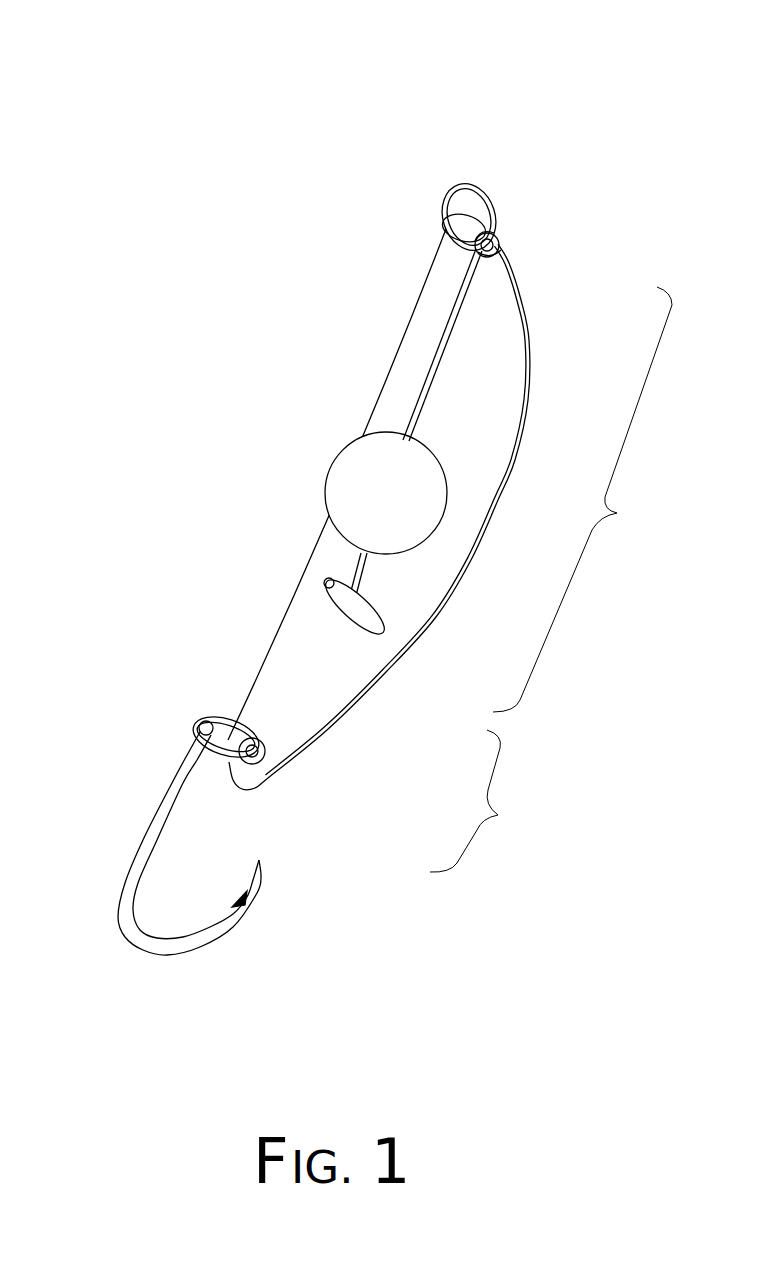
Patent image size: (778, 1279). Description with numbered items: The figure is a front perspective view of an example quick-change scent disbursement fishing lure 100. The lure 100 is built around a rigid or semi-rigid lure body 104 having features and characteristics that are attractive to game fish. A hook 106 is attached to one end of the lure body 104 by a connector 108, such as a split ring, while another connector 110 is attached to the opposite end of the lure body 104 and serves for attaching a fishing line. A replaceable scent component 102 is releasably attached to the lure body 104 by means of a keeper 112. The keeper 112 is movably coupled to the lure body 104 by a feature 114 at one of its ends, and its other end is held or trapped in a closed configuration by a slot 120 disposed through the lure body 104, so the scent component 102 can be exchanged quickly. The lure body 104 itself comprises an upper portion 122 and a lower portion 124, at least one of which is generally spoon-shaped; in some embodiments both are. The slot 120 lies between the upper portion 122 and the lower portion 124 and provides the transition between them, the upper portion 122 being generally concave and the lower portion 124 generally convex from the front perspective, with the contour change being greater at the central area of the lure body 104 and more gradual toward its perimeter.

The lure 100 is at (166, 62).
The scent component 102 is at (338, 478).
The lure body 104 is at (272, 648).
The hook 106 is at (121, 930).
The connector 108 is at (205, 733).
The connector 110 is at (452, 193).
The keeper 112 is at (430, 358).
The feature 114 is at (506, 242).
The slot 120 is at (328, 581).
The upper portion 122 is at (587, 499).
The lower portion 124 is at (496, 801).